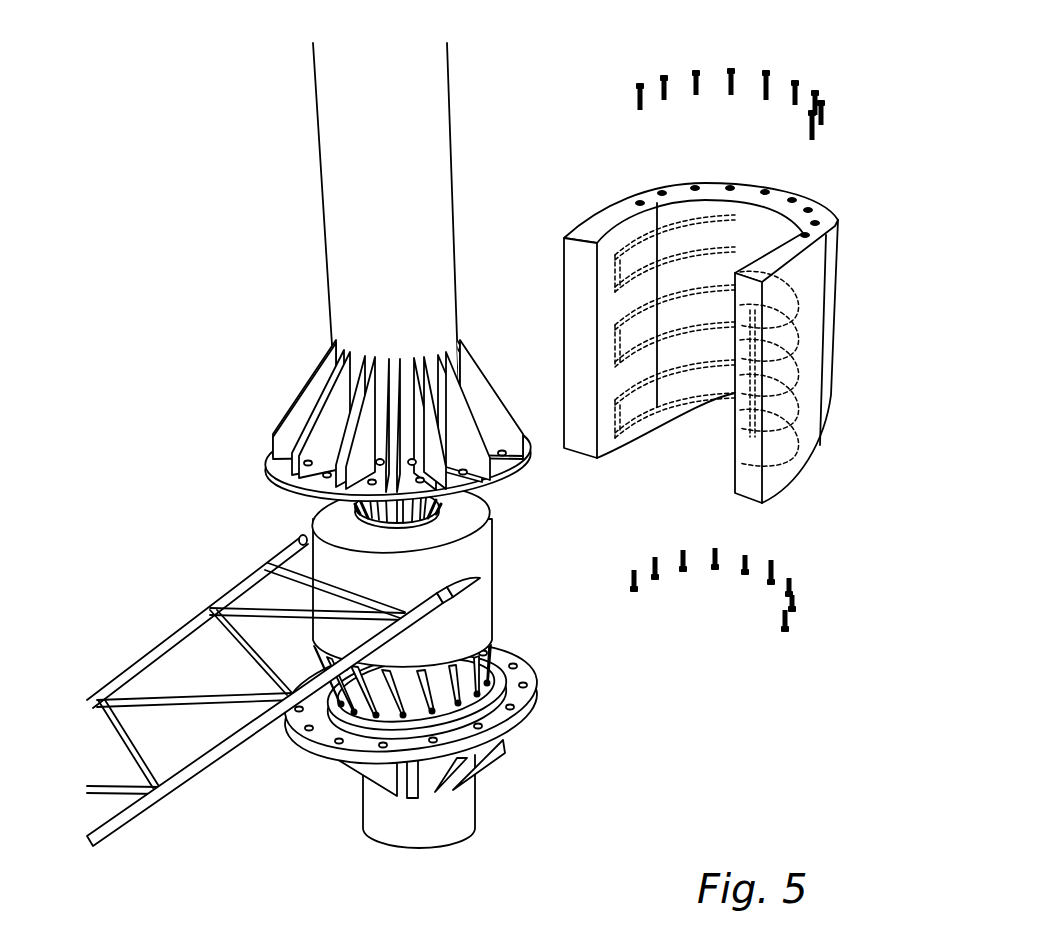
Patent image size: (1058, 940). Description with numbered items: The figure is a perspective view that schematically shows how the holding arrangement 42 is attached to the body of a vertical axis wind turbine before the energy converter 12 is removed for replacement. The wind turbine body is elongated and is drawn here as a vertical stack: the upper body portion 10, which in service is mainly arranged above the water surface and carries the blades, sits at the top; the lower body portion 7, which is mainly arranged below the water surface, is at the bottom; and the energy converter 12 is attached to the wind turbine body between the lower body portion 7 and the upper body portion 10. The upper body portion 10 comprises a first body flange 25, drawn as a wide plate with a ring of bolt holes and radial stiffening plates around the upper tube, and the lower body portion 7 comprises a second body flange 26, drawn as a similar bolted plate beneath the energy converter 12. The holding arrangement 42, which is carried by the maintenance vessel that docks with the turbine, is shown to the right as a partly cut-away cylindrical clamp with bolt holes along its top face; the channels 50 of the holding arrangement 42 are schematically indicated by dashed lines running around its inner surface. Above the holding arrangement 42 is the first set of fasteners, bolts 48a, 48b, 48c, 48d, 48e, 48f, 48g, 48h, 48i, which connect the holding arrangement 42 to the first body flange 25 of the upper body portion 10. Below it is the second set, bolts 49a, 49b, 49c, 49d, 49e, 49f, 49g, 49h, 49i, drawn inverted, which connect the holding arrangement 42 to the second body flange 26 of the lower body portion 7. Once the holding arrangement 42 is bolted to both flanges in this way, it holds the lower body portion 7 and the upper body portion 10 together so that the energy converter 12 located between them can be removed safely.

The upper body portion 10 is at (345, 207).
The first body flange 25 is at (268, 454).
The second body flange 26 is at (530, 706).
The energy converter 12 is at (325, 720).
The lower body portion 7 is at (486, 822).
The holding arrangement 42 is at (545, 300).
The channels 50 is at (630, 242).
The bolt 48a is at (640, 110).
The bolt 48b is at (664, 75).
The bolt 48c is at (696, 95).
The bolt 48d is at (731, 68).
The bolt 48e is at (766, 100).
The bolt 48f is at (795, 80).
The bolt 48g is at (818, 90).
The bolt 48h is at (822, 106).
The bolt 48i is at (812, 140).
The bolt 49a is at (634, 592).
The bolt 49b is at (655, 557).
The bolt 49c is at (683, 572).
The bolt 49d is at (715, 548).
The bolt 49e is at (745, 575).
The bolt 49f is at (771, 560).
The bolt 49g is at (792, 585).
The bolt 49h is at (795, 605).
The bolt 49i is at (785, 632).